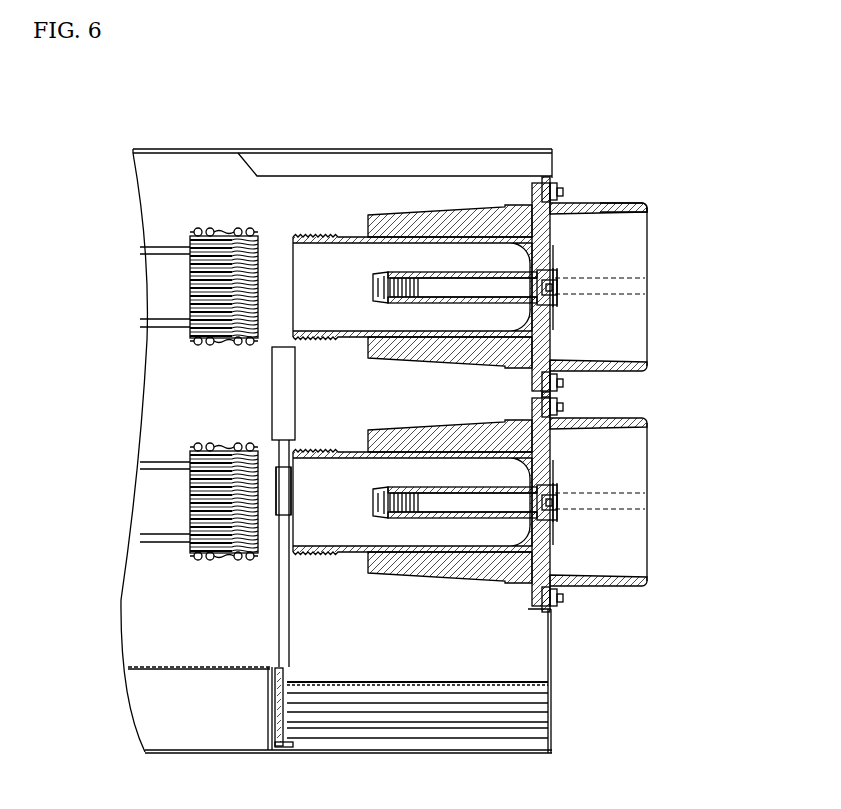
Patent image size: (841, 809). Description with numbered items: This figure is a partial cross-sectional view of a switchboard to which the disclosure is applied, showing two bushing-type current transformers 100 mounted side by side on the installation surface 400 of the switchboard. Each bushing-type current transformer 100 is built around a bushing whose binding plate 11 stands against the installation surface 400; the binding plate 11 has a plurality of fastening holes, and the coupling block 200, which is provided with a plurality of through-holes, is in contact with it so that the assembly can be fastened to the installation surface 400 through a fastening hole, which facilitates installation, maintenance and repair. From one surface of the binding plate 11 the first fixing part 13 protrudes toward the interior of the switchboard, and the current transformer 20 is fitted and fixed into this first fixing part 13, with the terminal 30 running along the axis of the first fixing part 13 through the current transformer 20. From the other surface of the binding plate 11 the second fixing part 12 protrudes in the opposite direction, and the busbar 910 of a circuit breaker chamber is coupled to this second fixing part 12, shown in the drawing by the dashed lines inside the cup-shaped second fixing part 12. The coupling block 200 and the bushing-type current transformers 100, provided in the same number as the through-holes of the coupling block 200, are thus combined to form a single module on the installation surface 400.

The first fixing part 13 is at (347, 237).
The current transformer 20 is at (397, 215).
The terminal 30 is at (397, 273).
The binding plate 11 is at (538, 356).
The coupling block 200 is at (542, 177).
The installation surface 400 is at (556, 188).
The bushing-type current transformer 100 is at (613, 199).
The second fixing part 12 is at (627, 203).
The busbar 910 is at (635, 293).